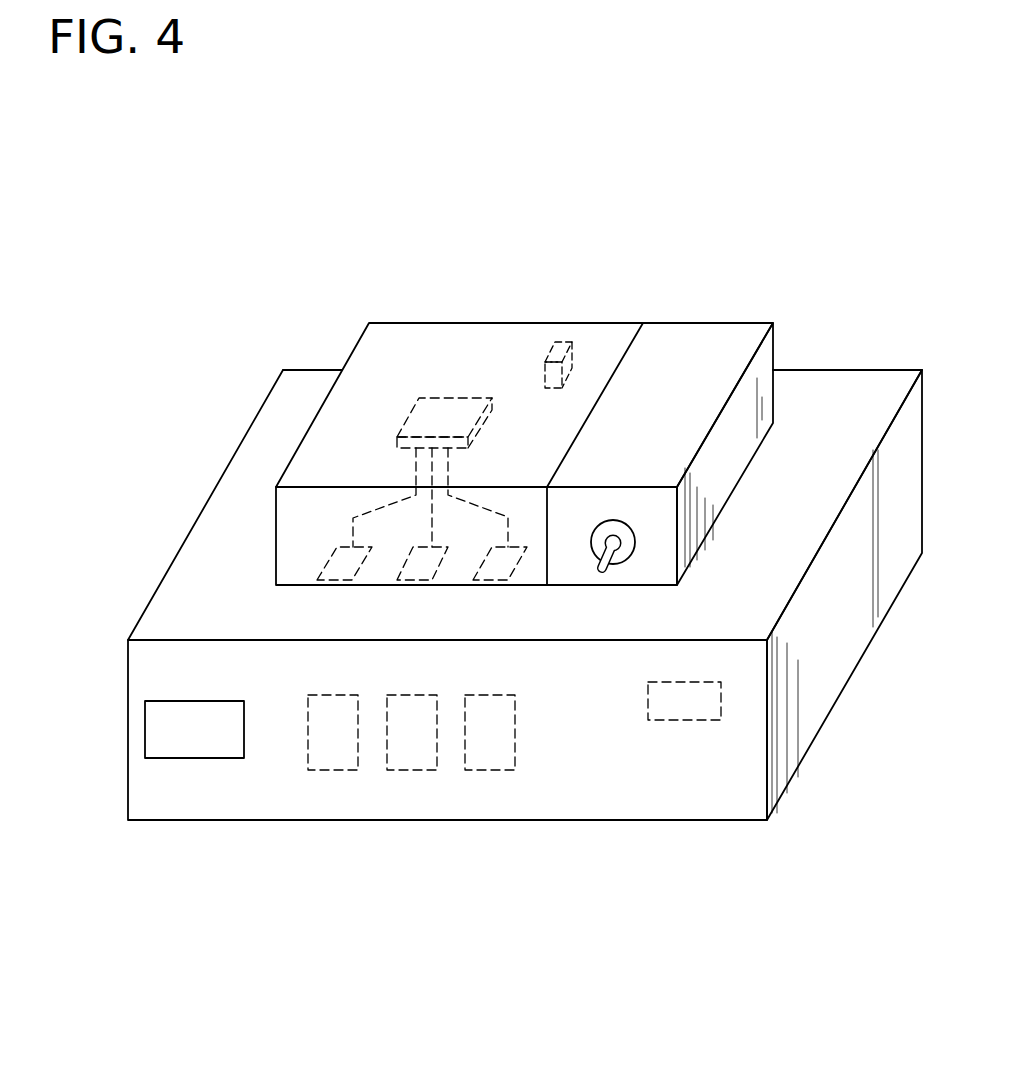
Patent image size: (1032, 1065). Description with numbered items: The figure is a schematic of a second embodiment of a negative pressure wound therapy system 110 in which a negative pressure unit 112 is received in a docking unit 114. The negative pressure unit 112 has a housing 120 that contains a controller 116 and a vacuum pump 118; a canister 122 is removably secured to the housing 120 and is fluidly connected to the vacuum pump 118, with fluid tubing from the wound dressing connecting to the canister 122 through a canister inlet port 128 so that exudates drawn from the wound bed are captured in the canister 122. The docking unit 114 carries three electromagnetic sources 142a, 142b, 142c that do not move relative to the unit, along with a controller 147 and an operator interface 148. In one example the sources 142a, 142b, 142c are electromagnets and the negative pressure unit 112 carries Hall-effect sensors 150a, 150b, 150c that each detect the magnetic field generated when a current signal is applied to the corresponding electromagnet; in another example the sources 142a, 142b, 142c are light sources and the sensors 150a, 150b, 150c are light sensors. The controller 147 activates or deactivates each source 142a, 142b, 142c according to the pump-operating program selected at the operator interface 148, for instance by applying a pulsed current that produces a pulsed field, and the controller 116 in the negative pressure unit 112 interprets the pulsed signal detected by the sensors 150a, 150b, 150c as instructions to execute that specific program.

The negative pressure wound therapy system 110 is at (814, 176).
The negative pressure unit 112 is at (467, 306).
The docking unit 114 is at (302, 356).
The controller 116 is at (442, 412).
The vacuum pump 118 is at (560, 340).
The housing 120 is at (307, 432).
The canister 122 is at (768, 391).
The canister inlet port 128 is at (620, 556).
The electromagnetic source 142a is at (333, 770).
The electromagnetic source 142b is at (412, 770).
The electromagnetic source 142c is at (480, 770).
The controller 147 is at (688, 720).
The operator interface 148 is at (187, 729).
The sensor 150a is at (327, 562).
The sensor 150b is at (407, 582).
The sensor 150c is at (492, 582).